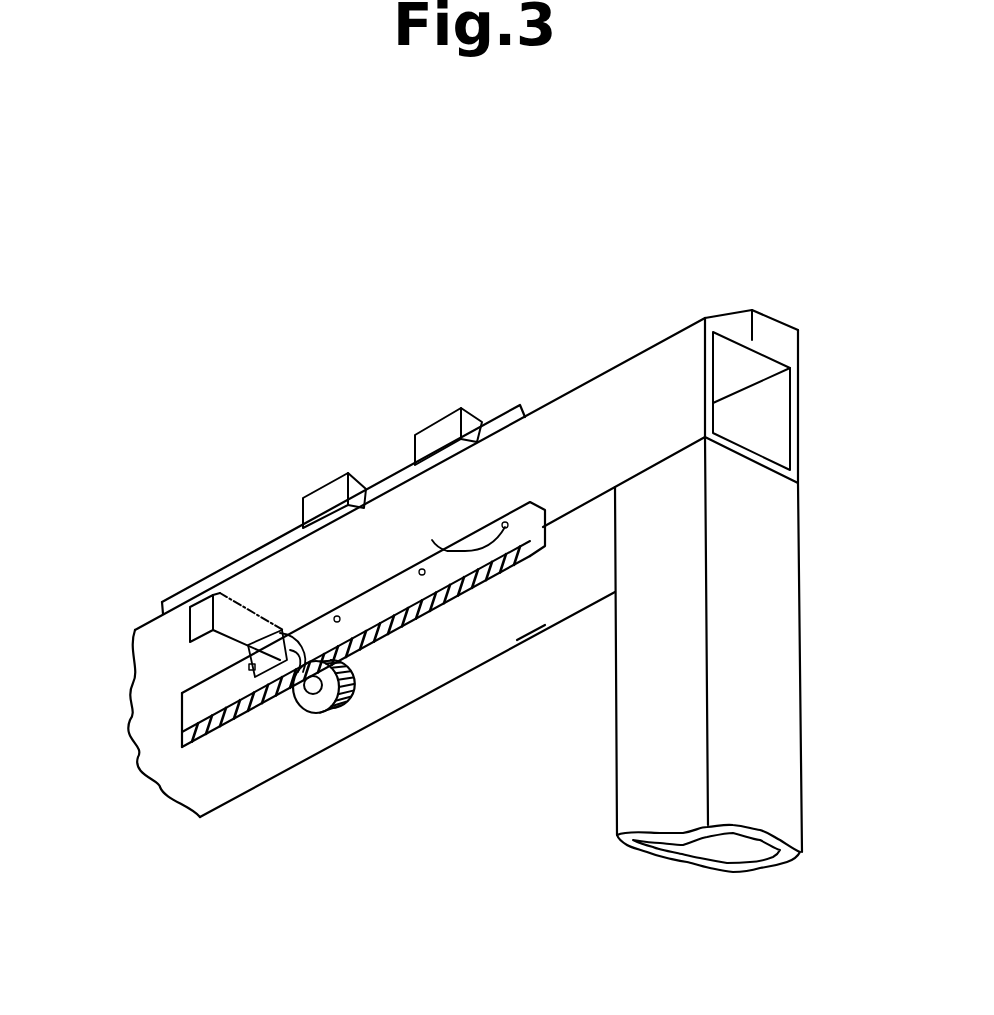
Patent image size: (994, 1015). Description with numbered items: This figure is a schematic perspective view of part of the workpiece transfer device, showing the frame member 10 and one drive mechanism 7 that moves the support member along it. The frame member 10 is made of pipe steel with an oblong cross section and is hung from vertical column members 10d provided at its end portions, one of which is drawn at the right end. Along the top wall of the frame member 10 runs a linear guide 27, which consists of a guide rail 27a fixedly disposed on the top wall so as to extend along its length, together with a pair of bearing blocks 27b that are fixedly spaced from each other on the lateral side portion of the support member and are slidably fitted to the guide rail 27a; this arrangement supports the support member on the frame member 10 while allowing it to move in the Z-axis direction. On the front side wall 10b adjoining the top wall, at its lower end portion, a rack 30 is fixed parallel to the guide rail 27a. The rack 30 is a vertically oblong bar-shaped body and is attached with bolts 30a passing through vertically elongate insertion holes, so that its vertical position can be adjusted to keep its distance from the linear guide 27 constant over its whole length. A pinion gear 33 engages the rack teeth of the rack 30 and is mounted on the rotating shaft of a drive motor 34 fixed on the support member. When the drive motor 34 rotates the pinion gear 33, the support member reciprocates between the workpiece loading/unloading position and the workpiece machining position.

The frame member 10 is at (593, 377).
The front side wall 10b is at (260, 590).
The vertical column member 10d is at (800, 693).
The linear guide 27 is at (417, 371).
The guide rail 27a is at (272, 533).
The bearing block 27b is at (340, 472).
The rack 30 is at (504, 513).
The bolt 30a is at (420, 568).
The pinion gear 33 is at (340, 712).
The drive motor 34 is at (213, 655).
The drive mechanism 7 is at (296, 731).